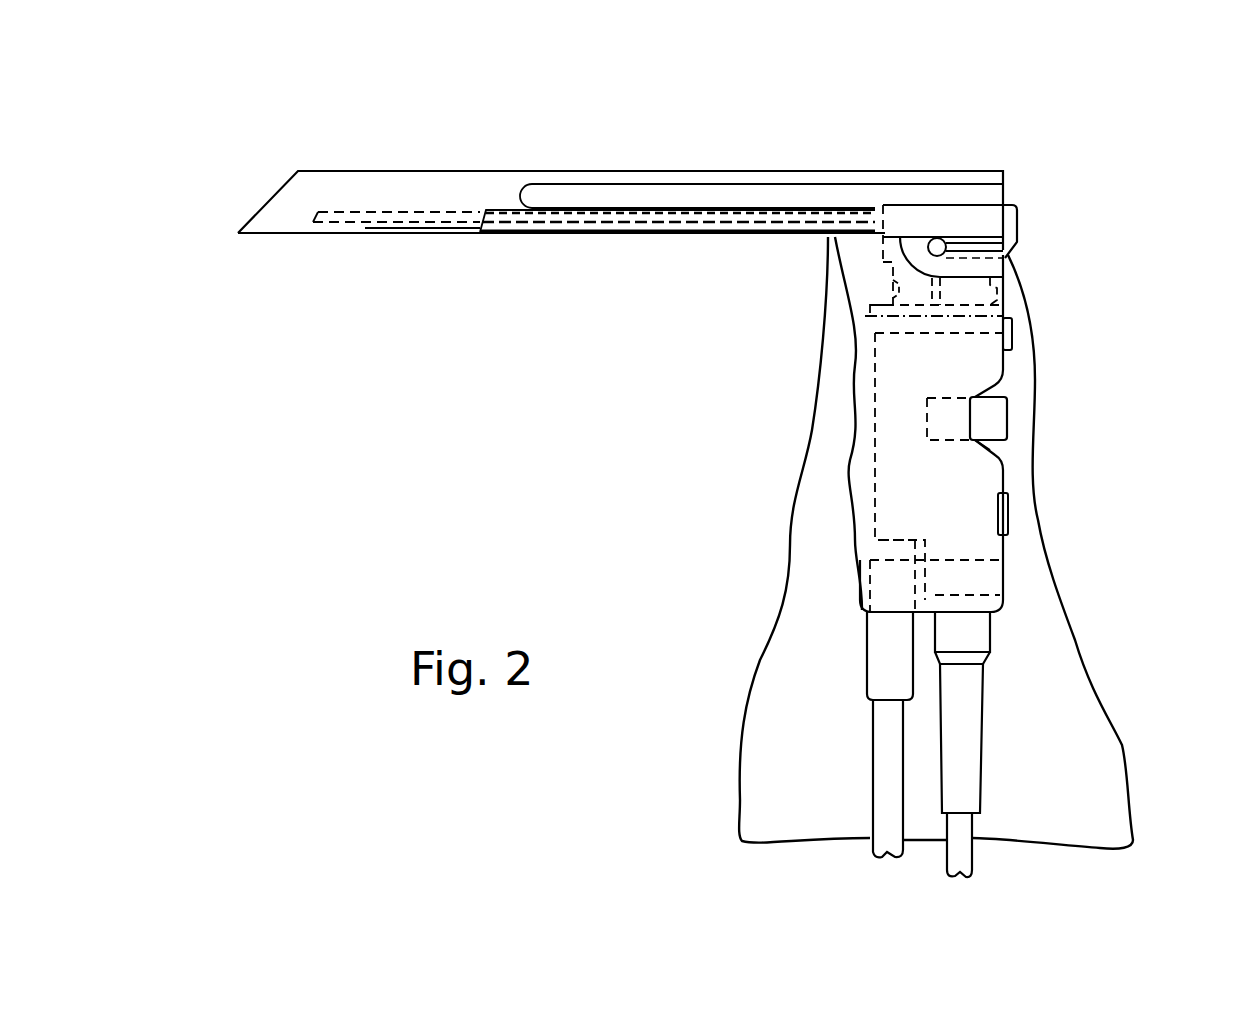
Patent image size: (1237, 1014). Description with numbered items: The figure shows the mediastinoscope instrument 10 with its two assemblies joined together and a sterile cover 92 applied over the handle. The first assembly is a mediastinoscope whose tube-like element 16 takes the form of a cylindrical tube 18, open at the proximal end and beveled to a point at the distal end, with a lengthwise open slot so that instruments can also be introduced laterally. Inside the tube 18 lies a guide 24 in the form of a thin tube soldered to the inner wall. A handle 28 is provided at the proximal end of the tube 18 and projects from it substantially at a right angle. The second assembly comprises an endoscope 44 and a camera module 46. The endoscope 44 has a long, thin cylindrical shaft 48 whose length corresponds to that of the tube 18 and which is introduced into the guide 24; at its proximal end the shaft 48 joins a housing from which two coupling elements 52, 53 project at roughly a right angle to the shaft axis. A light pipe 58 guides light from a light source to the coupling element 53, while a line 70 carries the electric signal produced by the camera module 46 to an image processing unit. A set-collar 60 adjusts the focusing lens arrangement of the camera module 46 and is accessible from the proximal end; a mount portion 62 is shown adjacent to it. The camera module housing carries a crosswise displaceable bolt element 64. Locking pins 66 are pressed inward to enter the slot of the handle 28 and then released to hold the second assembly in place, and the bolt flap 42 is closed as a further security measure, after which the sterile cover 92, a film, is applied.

The surgical instrument 10 is at (872, 110).
The tube-like element 16 is at (680, 171).
The cylindrical tube 18 is at (477, 186).
The guide 24 is at (653, 234).
The handle 28 is at (855, 523).
The bolt flap 42 is at (1010, 508).
The endoscope 44 is at (1012, 222).
The camera module 46 is at (883, 455).
The shaft 48 is at (340, 212).
The coupling element 52 is at (1000, 286).
The coupling element 53 is at (890, 290).
The light pipe 58 is at (880, 673).
The set-collar 60 is at (998, 414).
The button base 62 is at (1000, 450).
The bolt element 64 is at (1012, 327).
The locking pins 66 is at (943, 242).
The line 70 is at (965, 745).
The sterile cover 92 is at (1122, 742).